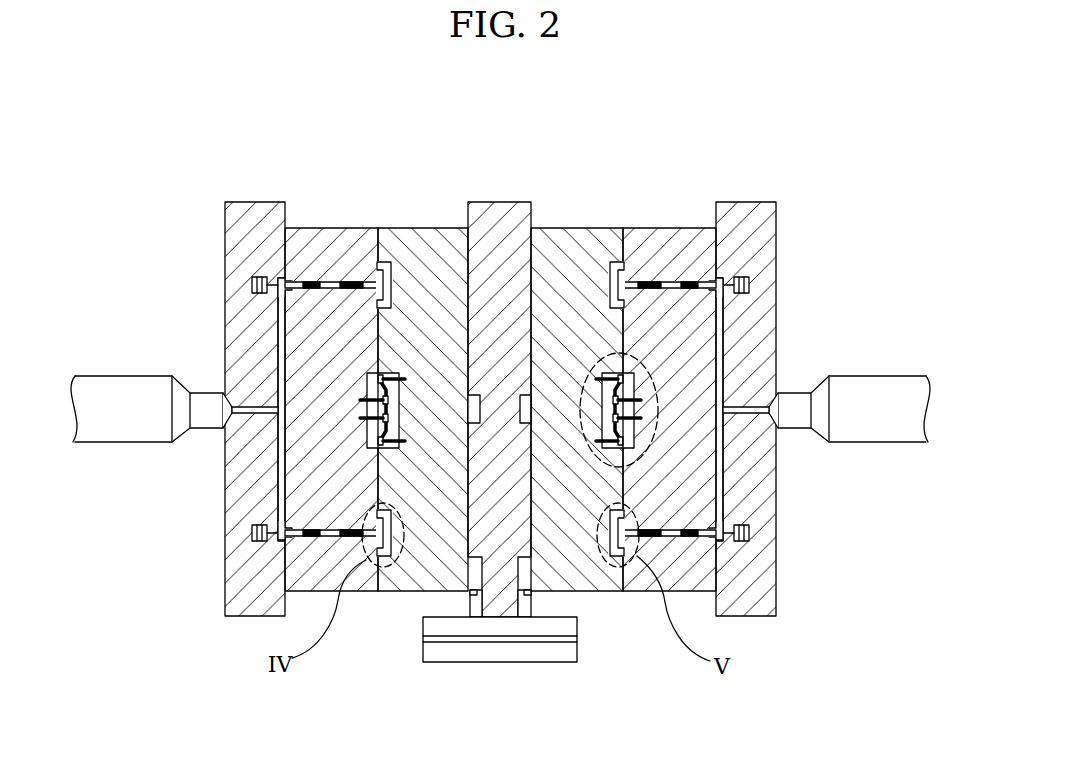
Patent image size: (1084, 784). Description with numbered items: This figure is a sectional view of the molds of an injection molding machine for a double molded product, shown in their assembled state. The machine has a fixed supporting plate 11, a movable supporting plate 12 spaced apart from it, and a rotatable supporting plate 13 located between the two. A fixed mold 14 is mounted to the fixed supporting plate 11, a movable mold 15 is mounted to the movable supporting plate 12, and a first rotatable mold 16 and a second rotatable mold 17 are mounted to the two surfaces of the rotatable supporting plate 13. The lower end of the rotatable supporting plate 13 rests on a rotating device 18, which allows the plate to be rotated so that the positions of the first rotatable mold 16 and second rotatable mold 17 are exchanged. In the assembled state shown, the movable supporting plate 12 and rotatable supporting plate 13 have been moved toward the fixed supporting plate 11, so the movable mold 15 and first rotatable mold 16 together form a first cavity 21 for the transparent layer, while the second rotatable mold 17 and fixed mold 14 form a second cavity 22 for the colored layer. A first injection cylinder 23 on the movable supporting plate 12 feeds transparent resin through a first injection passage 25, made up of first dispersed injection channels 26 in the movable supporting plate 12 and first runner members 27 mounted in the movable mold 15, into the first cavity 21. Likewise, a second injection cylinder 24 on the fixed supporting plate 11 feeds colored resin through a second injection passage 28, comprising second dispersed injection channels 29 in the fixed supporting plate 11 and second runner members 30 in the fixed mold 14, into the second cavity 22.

The fixed supporting plate 11 is at (758, 205).
The movable supporting plate 12 is at (258, 205).
The rotatable supporting plate 13 is at (497, 205).
The fixed mold 14 is at (698, 230).
The movable mold 15 is at (322, 230).
The first rotatable mold 16 is at (440, 230).
The second rotatable mold 17 is at (577, 230).
The rotating device 18 is at (572, 648).
The first cavity 21 is at (384, 263).
The second cavity 22 is at (623, 270).
The first injection cylinder 23 is at (106, 430).
The second injection cylinder 24 is at (893, 430).
The first injection passage 25 is at (158, 260).
The first dispersed injection channels 26 is at (280, 330).
The first runner members 27 is at (290, 278).
The second injection passage 28 is at (843, 260).
The second dispersed injection channels 29 is at (721, 330).
The second runner members 30 is at (711, 278).